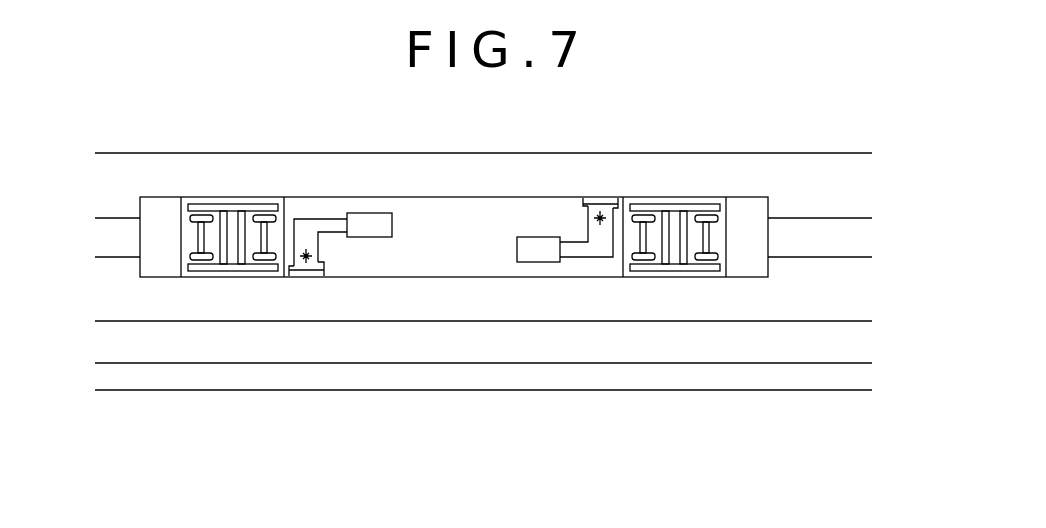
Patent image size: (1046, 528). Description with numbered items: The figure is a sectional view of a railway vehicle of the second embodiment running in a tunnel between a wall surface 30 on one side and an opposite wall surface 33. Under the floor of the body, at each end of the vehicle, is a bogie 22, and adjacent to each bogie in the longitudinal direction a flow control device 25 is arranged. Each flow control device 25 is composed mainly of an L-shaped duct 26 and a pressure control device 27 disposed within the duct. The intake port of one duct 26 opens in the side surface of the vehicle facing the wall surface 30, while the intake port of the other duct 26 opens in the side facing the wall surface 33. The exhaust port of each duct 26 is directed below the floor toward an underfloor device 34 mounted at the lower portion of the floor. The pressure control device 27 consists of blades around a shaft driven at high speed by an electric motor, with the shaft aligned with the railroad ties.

The bogie 22 is at (233, 271).
The flow control device 25 is at (375, 248).
The L-shaped duct 26 is at (312, 272).
The pressure control device 27 is at (310, 258).
The wall surface 30 is at (524, 152).
The wall surface 33 is at (425, 391).
The underfloor device 34 is at (393, 228).